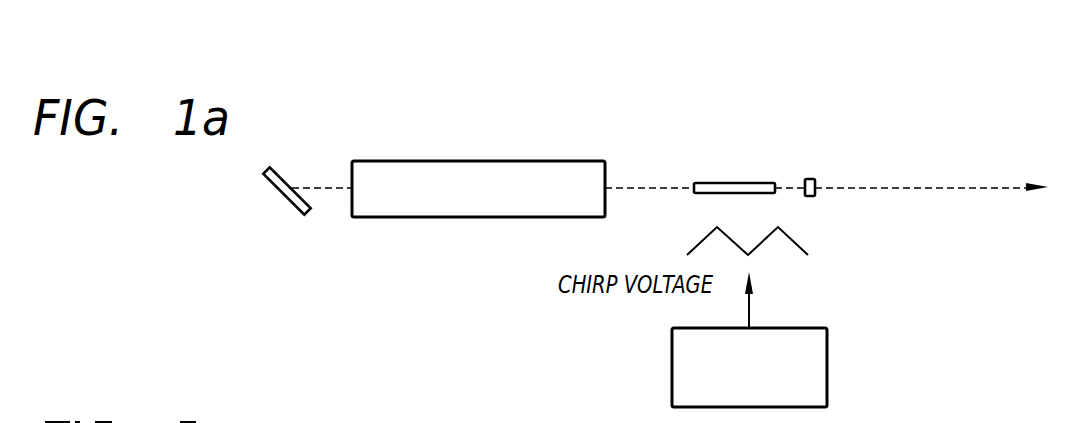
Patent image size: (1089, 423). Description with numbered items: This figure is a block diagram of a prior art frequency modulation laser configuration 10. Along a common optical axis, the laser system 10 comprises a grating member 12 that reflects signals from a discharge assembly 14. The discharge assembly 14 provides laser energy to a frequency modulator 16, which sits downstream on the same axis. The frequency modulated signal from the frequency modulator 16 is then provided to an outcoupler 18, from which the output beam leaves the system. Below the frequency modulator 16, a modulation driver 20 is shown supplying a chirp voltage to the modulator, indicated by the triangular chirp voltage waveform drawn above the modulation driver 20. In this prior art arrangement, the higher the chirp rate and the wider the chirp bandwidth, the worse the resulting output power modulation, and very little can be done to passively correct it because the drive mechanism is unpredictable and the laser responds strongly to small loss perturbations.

The FM laser configuration 10 is at (460, 292).
The grating member 12 is at (262, 172).
The discharge assembly 14 is at (483, 160).
The frequency modulator 16 is at (698, 182).
The outcoupler 18 is at (812, 198).
The modulation driver 20 is at (670, 347).